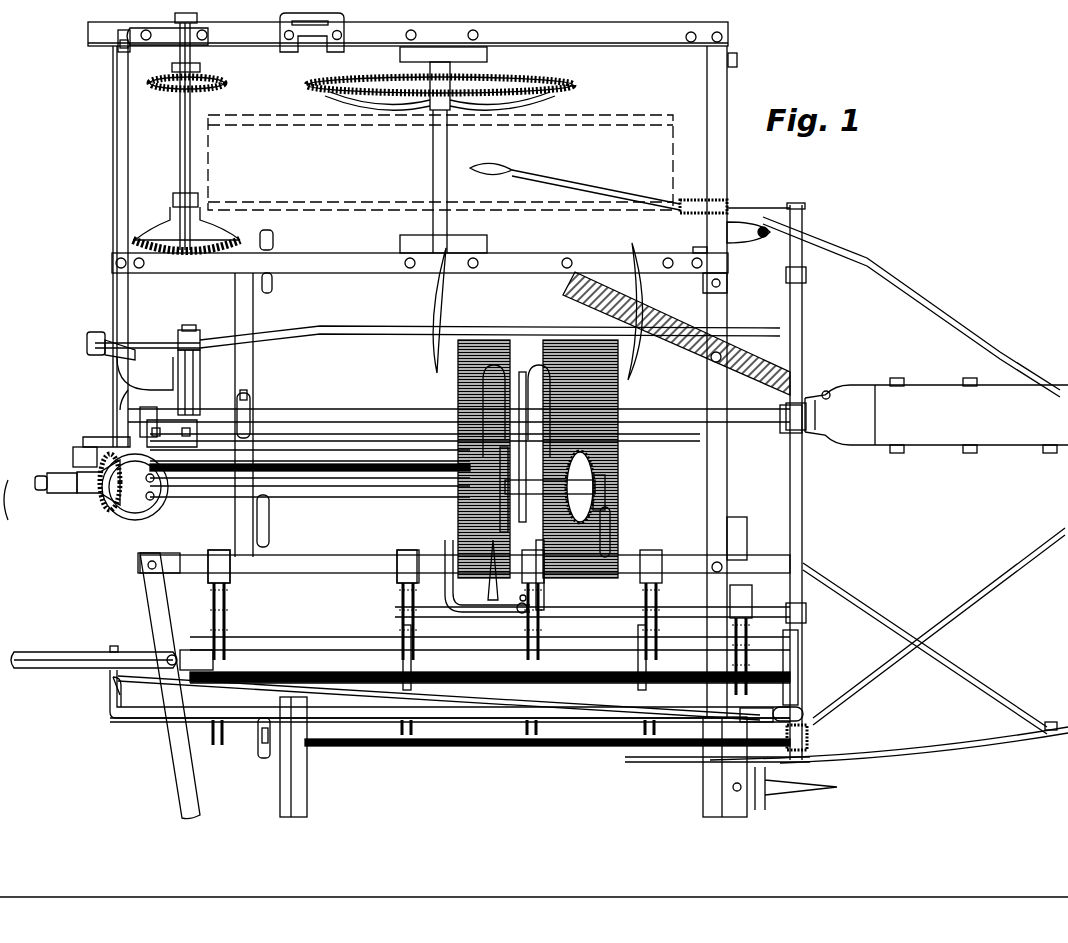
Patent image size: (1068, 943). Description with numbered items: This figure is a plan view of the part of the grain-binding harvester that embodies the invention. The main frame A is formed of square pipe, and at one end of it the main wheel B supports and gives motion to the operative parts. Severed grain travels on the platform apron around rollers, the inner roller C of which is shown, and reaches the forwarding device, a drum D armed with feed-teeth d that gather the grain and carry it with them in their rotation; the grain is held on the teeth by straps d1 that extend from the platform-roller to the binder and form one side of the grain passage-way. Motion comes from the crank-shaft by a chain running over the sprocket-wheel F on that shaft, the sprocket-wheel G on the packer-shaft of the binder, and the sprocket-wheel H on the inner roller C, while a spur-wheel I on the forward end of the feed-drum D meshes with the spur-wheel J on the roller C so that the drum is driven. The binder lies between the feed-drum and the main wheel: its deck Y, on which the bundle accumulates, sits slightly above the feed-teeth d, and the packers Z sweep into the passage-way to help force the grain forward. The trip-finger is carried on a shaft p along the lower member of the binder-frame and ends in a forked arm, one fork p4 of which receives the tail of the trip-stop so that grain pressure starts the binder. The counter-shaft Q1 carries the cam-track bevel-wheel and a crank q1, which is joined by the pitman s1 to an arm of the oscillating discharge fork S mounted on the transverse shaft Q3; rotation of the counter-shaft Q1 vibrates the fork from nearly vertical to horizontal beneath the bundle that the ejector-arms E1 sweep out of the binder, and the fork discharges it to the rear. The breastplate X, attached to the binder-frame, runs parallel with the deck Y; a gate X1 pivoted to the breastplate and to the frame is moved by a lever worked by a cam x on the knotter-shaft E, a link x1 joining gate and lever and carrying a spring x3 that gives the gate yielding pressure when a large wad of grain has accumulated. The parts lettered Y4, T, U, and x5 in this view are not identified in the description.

The main frame A is at (593, 39).
The main wheel B is at (440, 162).
The shaft gear Y4 is at (212, 86).
The sprocket-wheel F is at (268, 237).
The oscillating fork S is at (532, 323).
The pitman s1 is at (160, 342).
The counter-shaft Q1 is at (186, 332).
The transverse shaft Q3 is at (192, 358).
The crank q1 is at (108, 350).
The trip-shaft p is at (350, 413).
The fork of trip-shaft arm p4 is at (105, 433).
The axle tube T is at (120, 513).
The bevel pinion U is at (102, 497).
The sprocket-wheel G is at (268, 528).
The ejector-arms E1 is at (560, 360).
The deck Y is at (610, 460).
The breastplate X is at (530, 472).
The knotter-shaft E is at (608, 492).
The cam x is at (605, 510).
The packers Z is at (493, 590).
The straps d1 is at (407, 557).
The gate X1 is at (403, 618).
The spring x3 is at (547, 593).
The link x1 is at (550, 615).
The feed-drum D is at (490, 659).
The post x5 is at (403, 638).
The feed-teeth d is at (653, 597).
The sprocket-wheel H is at (262, 757).
The inner roller C is at (372, 742).
The spur-wheel I is at (803, 667).
The spur-wheel J is at (813, 737).